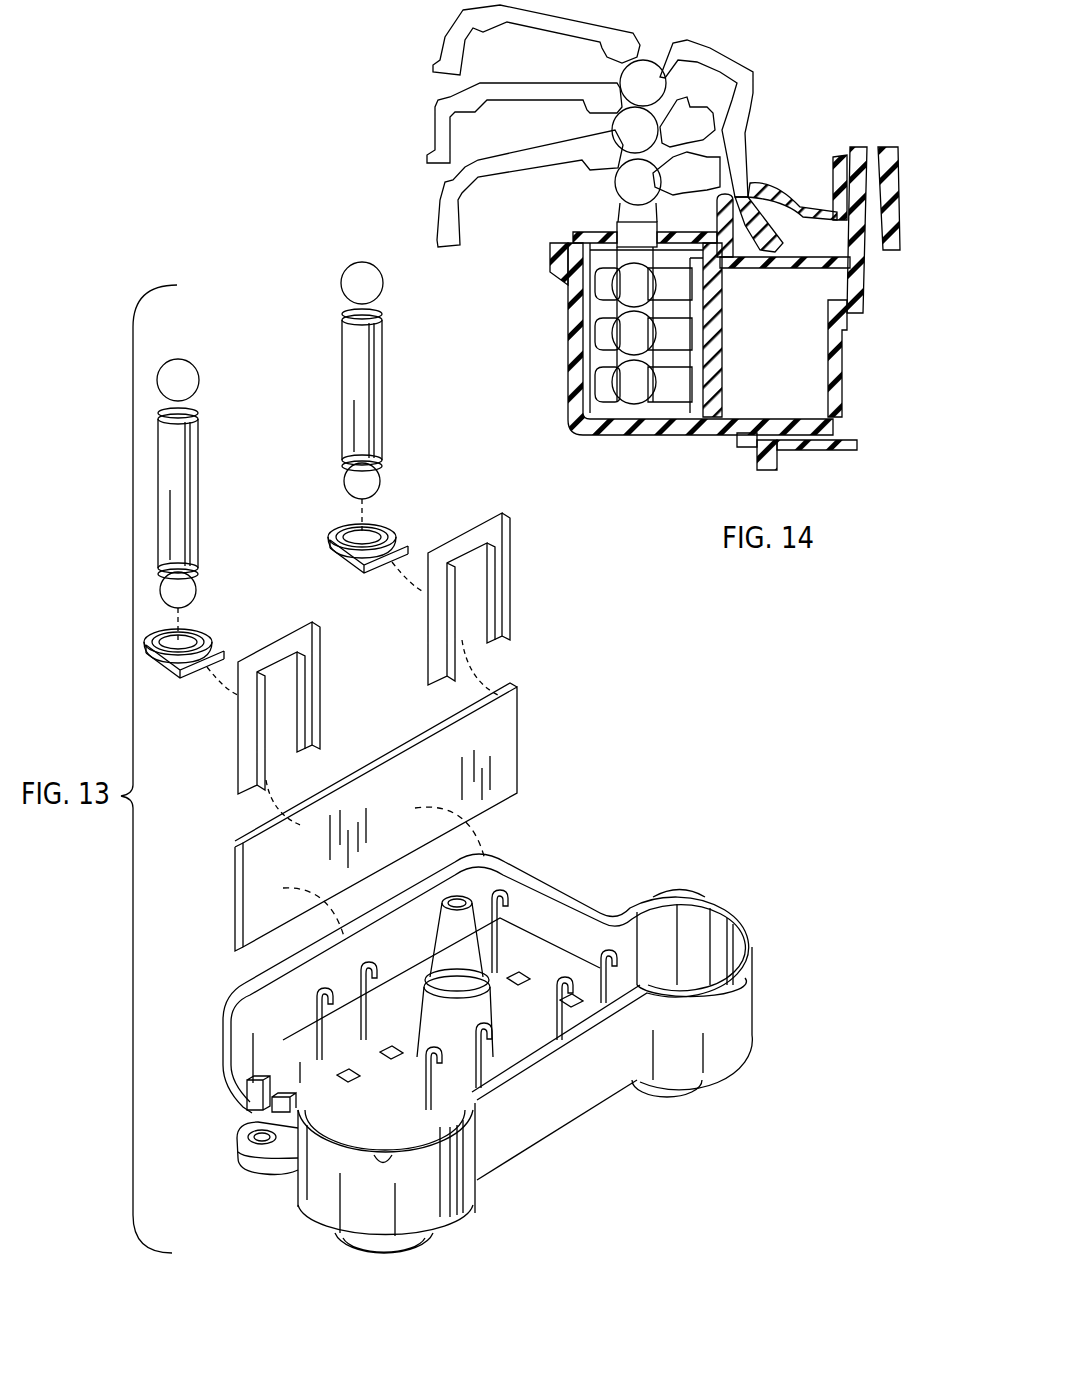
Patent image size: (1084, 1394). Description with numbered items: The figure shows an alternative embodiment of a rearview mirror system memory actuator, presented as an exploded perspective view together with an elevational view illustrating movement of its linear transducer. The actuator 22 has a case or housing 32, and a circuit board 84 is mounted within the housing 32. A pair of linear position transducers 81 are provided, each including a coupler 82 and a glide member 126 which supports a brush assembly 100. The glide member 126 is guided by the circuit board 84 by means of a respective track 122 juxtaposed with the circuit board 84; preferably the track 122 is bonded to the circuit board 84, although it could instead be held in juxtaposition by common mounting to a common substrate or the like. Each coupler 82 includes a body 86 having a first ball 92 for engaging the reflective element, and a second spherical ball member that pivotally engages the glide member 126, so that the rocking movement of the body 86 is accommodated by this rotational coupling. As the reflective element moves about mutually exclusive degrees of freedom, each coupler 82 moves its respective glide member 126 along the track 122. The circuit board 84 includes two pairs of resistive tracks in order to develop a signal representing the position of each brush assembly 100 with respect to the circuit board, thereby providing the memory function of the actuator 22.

In FIG. 13, the actuator 22 is at (597, 802).
In FIG. 13, the housing 32 is at (530, 863).
In FIG. 13, the linear position transducer 81 is at (254, 522).
In FIG. 14, the linear position transducer 81 is at (608, 226).
In FIG. 13, the coupler 82 is at (158, 468).
In FIG. 13, the circuit board 84 is at (512, 722).
In FIG. 14, the circuit board 84 is at (722, 336).
In FIG. 13, the body 86 is at (200, 470).
In FIG. 13, the first ball 92 is at (182, 378).
In FIG. 13, the brush assembly 100 is at (193, 665).
In FIG. 13, the track 122 is at (322, 708).
In FIG. 14, the track 122 is at (700, 412).
In FIG. 13, the glide member 126 is at (205, 628).
In FIG. 14, the glide member 126 is at (603, 415).